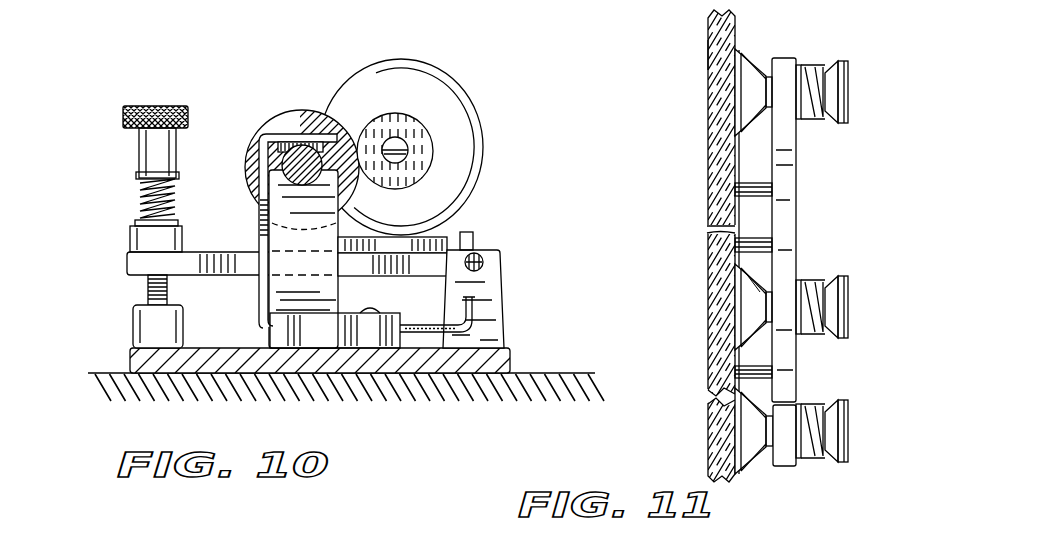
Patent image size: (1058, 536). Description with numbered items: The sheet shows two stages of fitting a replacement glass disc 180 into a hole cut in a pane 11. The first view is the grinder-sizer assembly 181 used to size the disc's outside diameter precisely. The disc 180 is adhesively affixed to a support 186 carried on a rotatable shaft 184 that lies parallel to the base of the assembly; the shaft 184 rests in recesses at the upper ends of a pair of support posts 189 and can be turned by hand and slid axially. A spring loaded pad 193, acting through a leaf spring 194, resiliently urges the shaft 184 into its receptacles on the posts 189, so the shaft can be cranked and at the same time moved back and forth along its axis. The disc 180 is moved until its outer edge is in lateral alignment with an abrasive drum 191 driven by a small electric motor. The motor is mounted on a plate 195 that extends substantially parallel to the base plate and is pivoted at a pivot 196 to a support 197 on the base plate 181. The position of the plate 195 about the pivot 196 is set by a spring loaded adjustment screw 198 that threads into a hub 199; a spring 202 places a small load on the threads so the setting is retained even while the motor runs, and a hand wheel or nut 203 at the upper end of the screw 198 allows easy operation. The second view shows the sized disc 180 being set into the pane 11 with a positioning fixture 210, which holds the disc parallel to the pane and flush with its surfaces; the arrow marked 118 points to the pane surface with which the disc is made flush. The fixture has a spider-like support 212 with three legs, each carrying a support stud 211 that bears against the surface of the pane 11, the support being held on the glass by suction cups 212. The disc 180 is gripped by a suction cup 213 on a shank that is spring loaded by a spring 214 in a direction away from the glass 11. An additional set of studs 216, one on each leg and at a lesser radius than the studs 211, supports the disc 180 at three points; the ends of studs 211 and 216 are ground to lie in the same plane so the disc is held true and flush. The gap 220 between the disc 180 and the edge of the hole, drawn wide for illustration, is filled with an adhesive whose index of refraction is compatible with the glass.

In FIG. 11, the pane of glass 11 is at (708, 62).
In FIG. 11, the support plate 118 is at (731, 37).
In FIG. 10, the glass disc 180 is at (307, 110).
In FIG. 11, the glass disc 180 is at (727, 310).
In FIG. 10, the grinder-sizer assembly 181 is at (318, 374).
In FIG. 10, the rotatable shaft 184 is at (284, 162).
In FIG. 10, the support 186 is at (341, 150).
In FIG. 10, the support posts 189 is at (340, 218).
In FIG. 10, the abrasive drum 191 is at (433, 152).
In FIG. 10, the spring loaded pad 193 is at (287, 132).
In FIG. 10, the leaf spring 194 is at (259, 226).
In FIG. 10, the plate 195 is at (428, 262).
In FIG. 10, the pivot 196 is at (484, 262).
In FIG. 10, the support 197 is at (485, 325).
In FIG. 10, the spring loaded adjustment screw 198 is at (148, 289).
In FIG. 10, the hub 199 is at (132, 237).
In FIG. 10, the spring 202 is at (140, 195).
In FIG. 10, the hand wheel or nut 203 is at (148, 105).
In FIG. 11, the fixture 210 is at (796, 158).
In FIG. 11, the support studs 211 is at (757, 185).
In FIG. 11, the support 212 is at (797, 398).
In FIG. 11, the suction cup 213 is at (758, 296).
In FIG. 11, the spring 214 is at (818, 318).
In FIG. 11, the studs 216 is at (753, 242).
In FIG. 11, the gap 220 is at (710, 228).